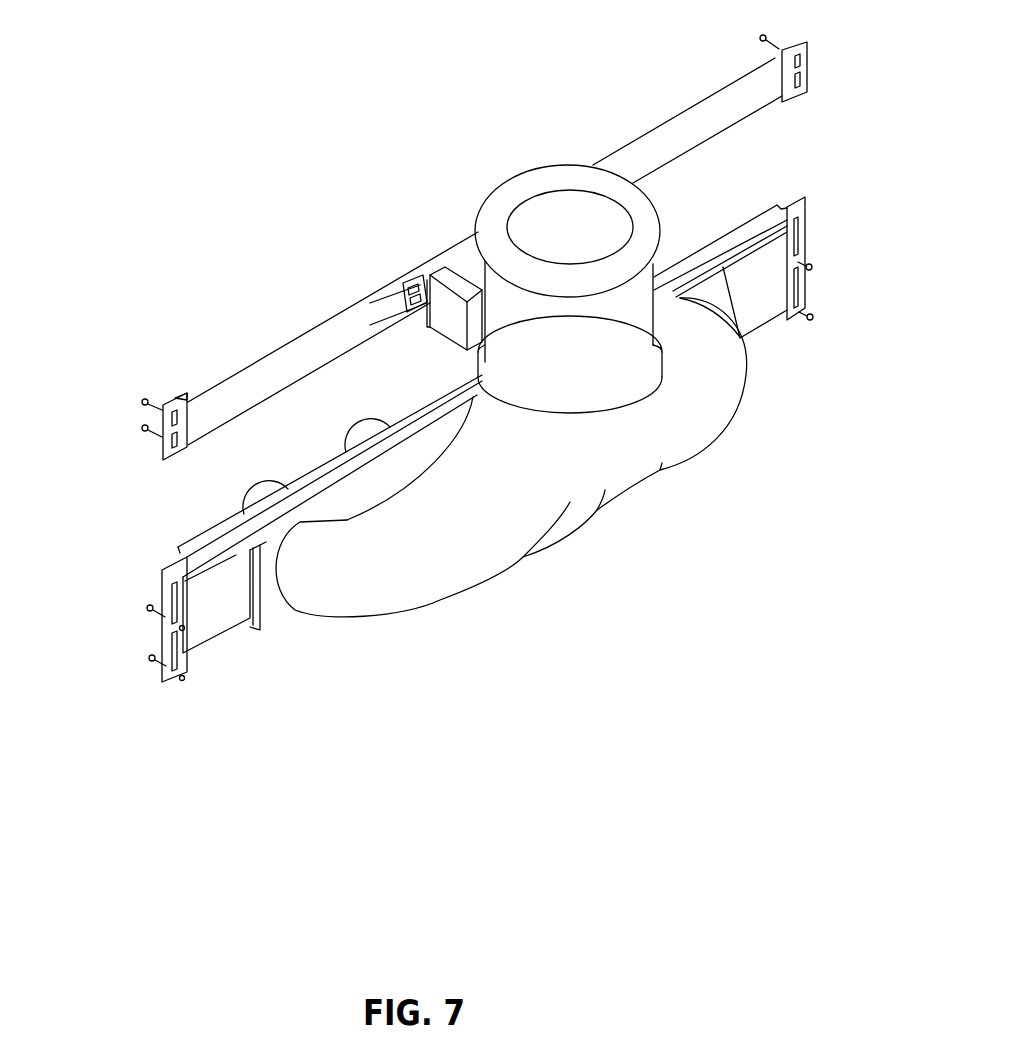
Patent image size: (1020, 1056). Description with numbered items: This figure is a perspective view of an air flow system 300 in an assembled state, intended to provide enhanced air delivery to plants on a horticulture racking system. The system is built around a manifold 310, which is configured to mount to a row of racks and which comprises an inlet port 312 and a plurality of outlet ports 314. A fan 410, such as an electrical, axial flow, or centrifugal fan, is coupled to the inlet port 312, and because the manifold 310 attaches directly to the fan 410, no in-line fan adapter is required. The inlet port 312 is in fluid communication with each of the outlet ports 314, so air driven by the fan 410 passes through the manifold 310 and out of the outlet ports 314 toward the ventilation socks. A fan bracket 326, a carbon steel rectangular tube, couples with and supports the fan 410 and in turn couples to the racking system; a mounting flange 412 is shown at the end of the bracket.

The air flow system 300 is at (318, 92).
The manifold 310 is at (363, 577).
The inlet port 312 is at (480, 367).
The plurality of outlet ports 314 is at (152, 498).
The fan bracket 326 is at (722, 112).
The fan 410 is at (498, 198).
The mounting flange 412 is at (223, 410).